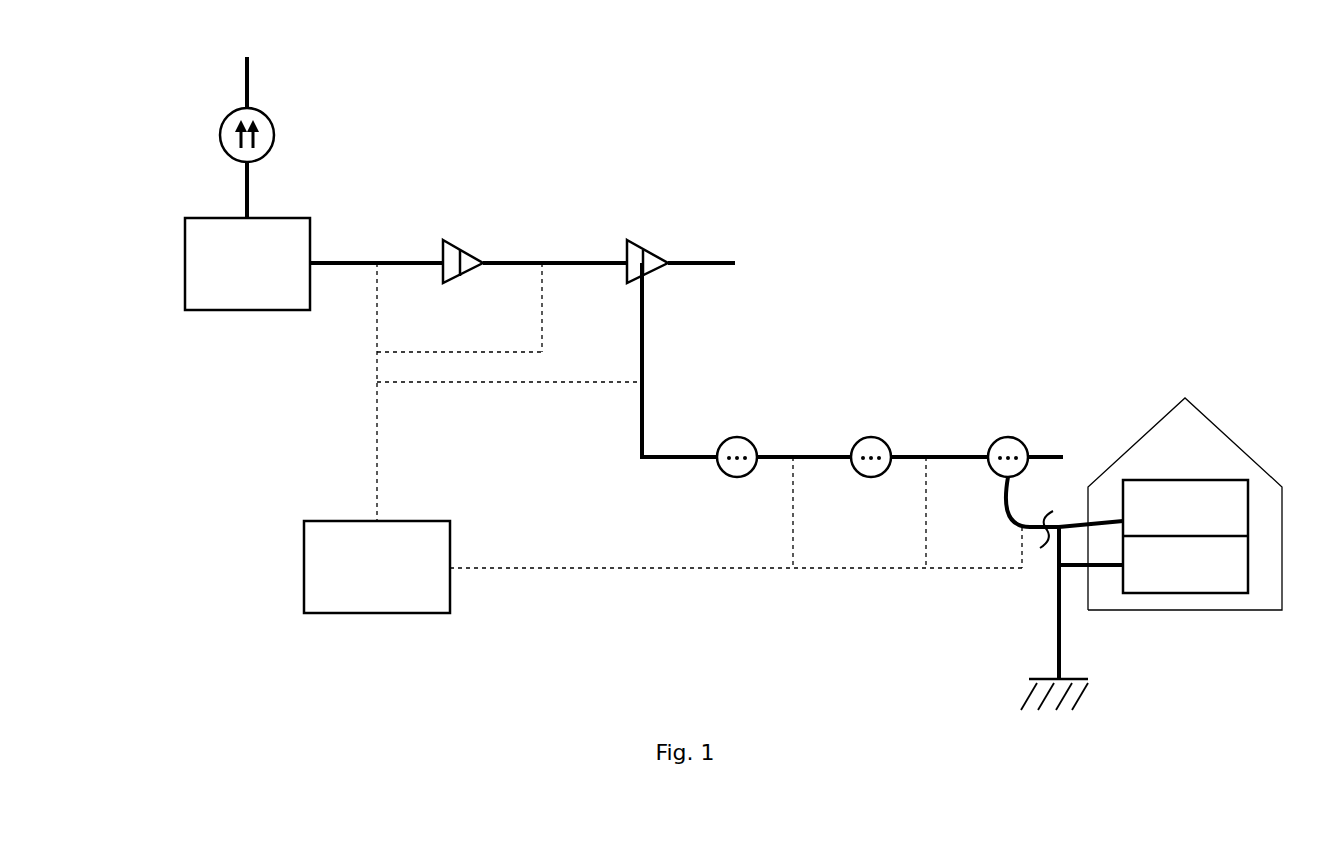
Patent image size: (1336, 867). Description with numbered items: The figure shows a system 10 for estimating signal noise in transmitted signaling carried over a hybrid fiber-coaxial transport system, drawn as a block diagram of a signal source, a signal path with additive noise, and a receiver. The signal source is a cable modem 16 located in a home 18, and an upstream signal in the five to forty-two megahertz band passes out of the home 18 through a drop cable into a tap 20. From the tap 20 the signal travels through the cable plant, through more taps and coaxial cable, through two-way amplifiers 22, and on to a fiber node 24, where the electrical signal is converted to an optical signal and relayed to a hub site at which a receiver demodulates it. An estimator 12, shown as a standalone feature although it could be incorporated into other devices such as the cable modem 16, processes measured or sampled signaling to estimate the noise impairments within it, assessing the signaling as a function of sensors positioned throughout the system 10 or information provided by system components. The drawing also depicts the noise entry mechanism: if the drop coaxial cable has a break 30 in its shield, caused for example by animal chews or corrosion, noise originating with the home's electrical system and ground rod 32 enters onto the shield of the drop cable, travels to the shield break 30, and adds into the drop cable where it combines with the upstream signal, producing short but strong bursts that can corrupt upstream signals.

The system 10 is at (847, 109).
The estimator 12 is at (423, 518).
The cable modem 16 is at (1207, 479).
The home 18 is at (1213, 418).
The tap 20 is at (1012, 438).
The 2-way amplifiers 22 is at (645, 252).
The fiber node 24 is at (278, 220).
The shield break 30 is at (1037, 571).
The ground rod 32 is at (1061, 649).